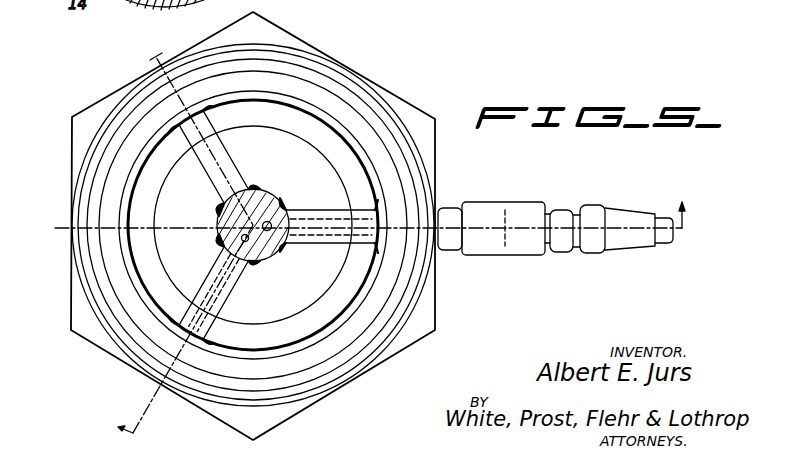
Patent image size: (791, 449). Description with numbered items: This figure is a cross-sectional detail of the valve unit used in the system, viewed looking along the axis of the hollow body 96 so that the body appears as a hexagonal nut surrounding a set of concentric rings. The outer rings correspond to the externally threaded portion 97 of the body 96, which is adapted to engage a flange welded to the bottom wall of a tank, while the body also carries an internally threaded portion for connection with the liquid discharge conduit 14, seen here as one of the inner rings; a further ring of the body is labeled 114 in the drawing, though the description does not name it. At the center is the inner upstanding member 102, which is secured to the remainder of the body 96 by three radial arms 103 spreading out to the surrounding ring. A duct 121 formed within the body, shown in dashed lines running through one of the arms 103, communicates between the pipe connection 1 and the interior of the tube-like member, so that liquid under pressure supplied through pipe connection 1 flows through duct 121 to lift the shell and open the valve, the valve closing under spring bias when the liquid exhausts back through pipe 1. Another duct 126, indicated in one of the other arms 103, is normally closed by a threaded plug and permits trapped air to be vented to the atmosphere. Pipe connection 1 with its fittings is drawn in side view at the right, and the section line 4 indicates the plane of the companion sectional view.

The pipe connection 1 is at (665, 239).
The section line 4- 4 is at (392, 243).
The liquid discharge conduit 14 is at (279, 122).
The hollow body 96 is at (348, 103).
The externally threaded portion 97 is at (88, 172).
The inner upstanding member 102 is at (268, 193).
The radial arms 103 is at (202, 164).
The inner rim ring 114 is at (125, 202).
The duct 121 is at (318, 222).
The duct 126 is at (241, 239).